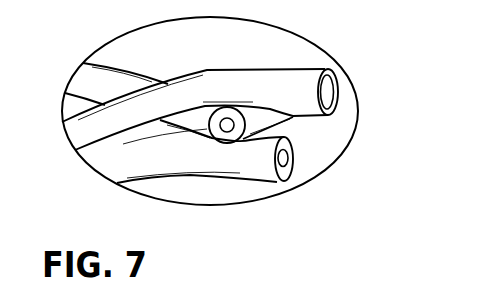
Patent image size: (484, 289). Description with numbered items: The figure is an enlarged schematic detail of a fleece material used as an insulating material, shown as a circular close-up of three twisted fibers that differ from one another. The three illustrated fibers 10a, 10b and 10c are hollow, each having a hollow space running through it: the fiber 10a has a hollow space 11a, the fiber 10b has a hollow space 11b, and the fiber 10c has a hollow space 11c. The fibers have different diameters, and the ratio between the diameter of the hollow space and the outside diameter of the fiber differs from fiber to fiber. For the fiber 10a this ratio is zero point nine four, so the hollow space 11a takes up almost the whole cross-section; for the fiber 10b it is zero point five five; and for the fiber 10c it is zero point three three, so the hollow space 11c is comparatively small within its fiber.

The fiber 10a is at (300, 101).
The fiber 10b is at (197, 122).
The fiber 10c is at (191, 162).
The hollow space 11a is at (330, 91).
The hollow space 11b is at (232, 124).
The hollow space 11c is at (283, 158).